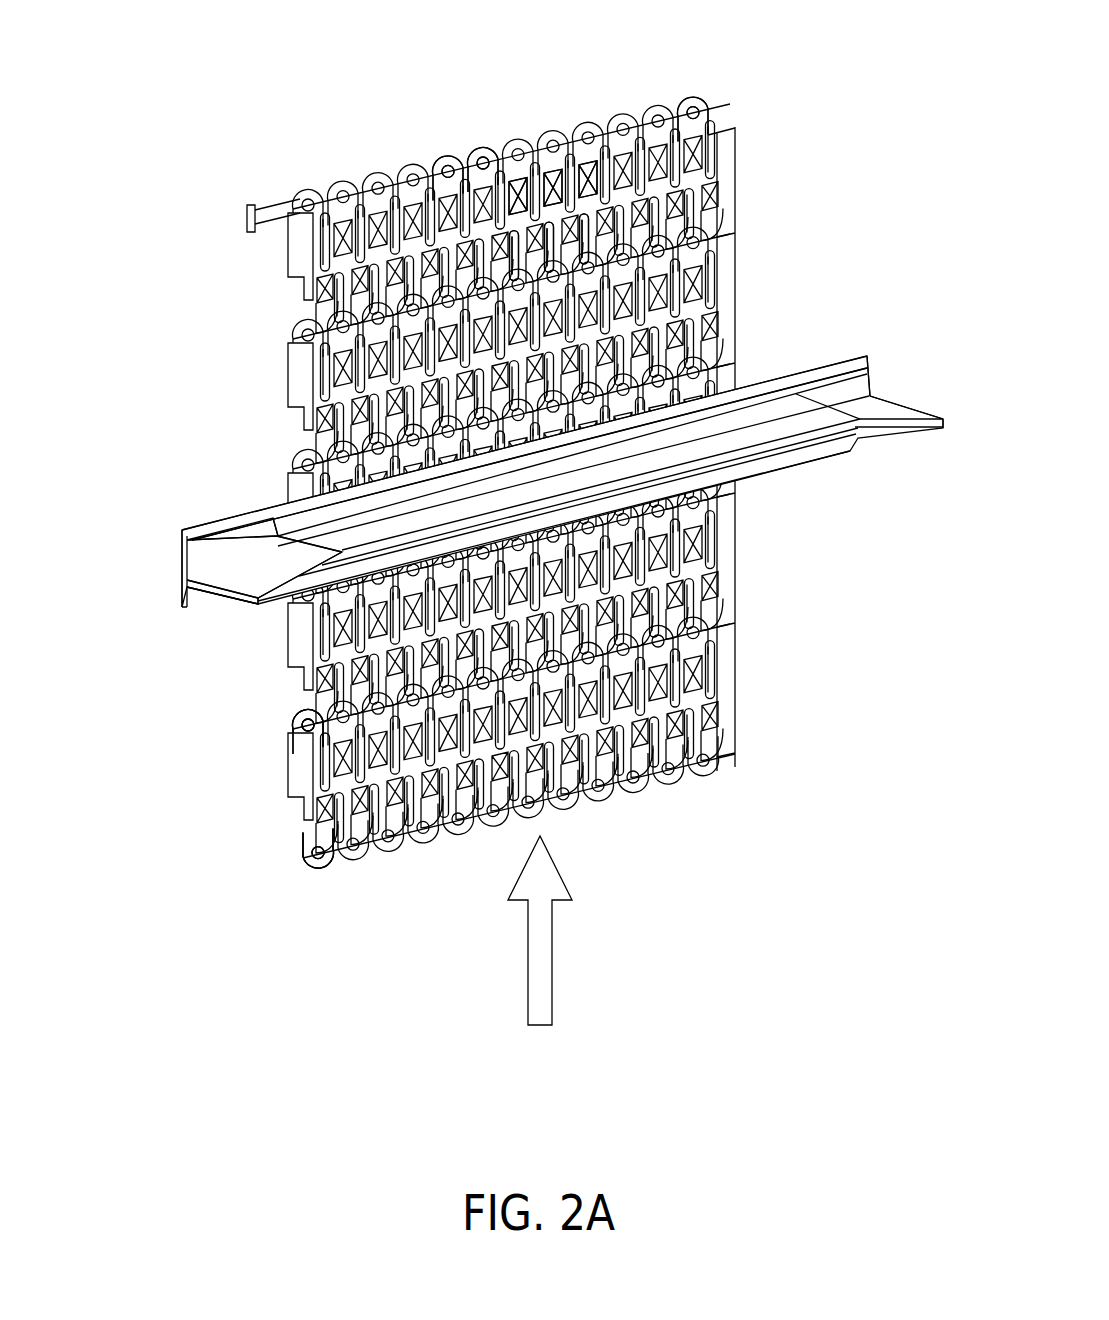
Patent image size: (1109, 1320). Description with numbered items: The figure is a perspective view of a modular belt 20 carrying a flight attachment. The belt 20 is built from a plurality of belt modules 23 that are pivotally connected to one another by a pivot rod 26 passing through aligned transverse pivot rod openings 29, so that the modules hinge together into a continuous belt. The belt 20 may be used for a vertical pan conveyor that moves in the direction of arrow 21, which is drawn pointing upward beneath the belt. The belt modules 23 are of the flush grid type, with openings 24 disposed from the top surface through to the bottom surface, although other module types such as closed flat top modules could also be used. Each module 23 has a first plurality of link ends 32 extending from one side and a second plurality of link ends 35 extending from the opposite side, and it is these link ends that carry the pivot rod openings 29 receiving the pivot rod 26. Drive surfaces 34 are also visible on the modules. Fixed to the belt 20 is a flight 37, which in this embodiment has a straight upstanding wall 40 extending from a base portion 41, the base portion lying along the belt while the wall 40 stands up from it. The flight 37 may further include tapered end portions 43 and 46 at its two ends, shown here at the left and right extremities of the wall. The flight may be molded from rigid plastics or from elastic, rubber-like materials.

The modular belt 20 is at (501, 494).
The arrow 21 is at (553, 957).
The belt modules 23 is at (292, 263).
The openings 24 is at (352, 184).
The pivot rod 26 is at (277, 215).
The pivot rod openings 29 is at (688, 97).
The first plurality of link ends 32 is at (455, 147).
The drive surface 34 is at (613, 186).
The second plurality of link ends 35 is at (337, 862).
The flight 37 is at (820, 387).
The straight upstanding wall 40 is at (520, 402).
The base portion 41 is at (752, 405).
The tapered end portion 43 is at (247, 567).
The tapered end portion 46 is at (878, 410).